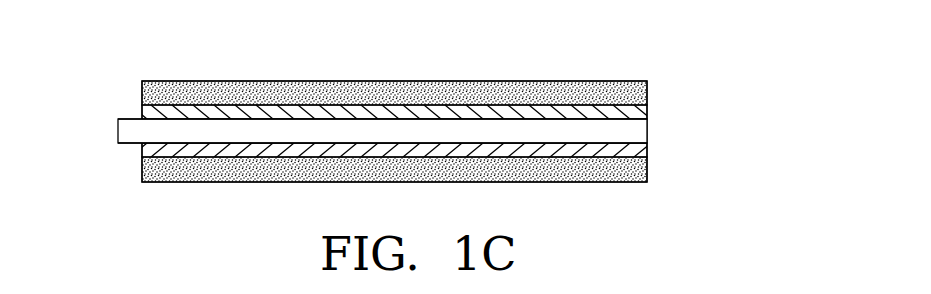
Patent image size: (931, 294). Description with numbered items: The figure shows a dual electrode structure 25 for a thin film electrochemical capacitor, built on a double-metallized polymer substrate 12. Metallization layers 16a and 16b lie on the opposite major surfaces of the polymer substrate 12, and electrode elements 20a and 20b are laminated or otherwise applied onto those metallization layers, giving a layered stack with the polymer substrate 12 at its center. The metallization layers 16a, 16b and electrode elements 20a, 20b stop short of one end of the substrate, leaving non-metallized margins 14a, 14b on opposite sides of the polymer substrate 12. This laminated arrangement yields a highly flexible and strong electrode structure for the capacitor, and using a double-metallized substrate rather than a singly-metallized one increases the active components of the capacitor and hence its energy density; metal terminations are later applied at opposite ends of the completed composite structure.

The dual electrode structure 25 is at (116, 48).
The polymer substrate 12 is at (638, 126).
The non-metallized margin 14a is at (142, 114).
The non-metallized margin 14b is at (141, 146).
The metallization layer 16a is at (141, 110).
The metallization layer 16b is at (143, 148).
The electrode element 20a is at (522, 92).
The electrode element 20b is at (523, 172).